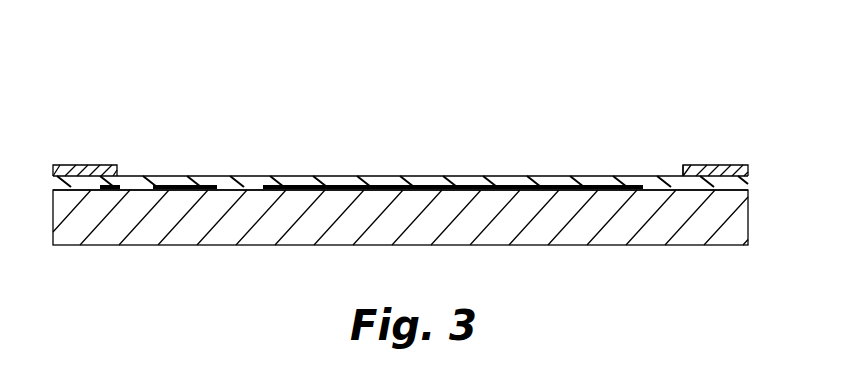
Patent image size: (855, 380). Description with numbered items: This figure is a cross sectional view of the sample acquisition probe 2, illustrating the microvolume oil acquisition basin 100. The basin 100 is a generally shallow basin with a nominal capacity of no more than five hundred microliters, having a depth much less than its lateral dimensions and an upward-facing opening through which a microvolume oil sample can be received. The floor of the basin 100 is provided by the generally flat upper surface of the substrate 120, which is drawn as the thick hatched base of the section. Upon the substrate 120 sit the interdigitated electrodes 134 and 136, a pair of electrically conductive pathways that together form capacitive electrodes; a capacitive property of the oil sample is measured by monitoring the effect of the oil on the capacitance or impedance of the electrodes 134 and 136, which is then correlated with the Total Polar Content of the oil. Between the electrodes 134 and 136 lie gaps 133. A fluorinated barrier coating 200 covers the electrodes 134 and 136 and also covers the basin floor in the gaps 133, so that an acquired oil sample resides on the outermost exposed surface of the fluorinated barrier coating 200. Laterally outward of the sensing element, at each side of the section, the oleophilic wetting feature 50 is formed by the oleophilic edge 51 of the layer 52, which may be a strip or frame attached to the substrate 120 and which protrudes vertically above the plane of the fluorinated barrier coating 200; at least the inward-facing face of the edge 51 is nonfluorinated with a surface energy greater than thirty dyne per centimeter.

The sample acquisition probe 2 is at (642, 76).
The oleophilic wetting feature 50 is at (120, 173).
The oleophilic edge 51 is at (682, 174).
The layer 52 is at (715, 167).
The microvolume oil acquisition basin 100 is at (503, 173).
The substrate 120 is at (538, 233).
The gaps 133 is at (257, 189).
The interdigitated electrode 134 is at (178, 189).
The interdigitated electrode 136 is at (342, 188).
The fluorinated barrier coating 200 is at (420, 184).